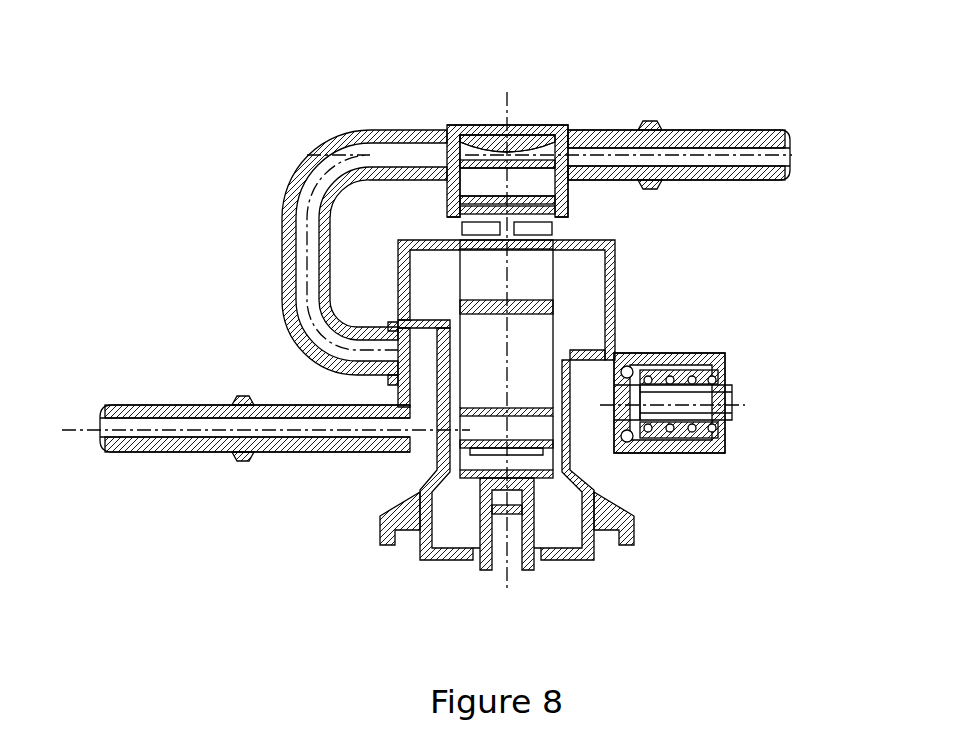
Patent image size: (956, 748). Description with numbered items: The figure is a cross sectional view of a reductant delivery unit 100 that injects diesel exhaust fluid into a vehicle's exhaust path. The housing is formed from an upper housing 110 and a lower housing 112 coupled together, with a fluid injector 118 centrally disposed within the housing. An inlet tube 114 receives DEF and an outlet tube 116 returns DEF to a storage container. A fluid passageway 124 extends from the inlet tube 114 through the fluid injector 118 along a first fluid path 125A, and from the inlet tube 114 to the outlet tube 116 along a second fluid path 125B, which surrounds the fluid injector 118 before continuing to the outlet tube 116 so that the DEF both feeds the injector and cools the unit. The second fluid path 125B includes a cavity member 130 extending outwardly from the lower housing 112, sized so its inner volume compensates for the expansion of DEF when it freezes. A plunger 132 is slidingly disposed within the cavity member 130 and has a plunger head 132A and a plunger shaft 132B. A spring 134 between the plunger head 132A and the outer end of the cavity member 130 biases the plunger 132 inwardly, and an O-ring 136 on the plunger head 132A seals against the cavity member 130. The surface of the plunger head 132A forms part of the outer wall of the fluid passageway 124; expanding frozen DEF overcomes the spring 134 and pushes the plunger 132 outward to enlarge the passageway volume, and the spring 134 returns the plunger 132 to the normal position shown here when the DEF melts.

The reductant delivery unit 100 is at (203, 76).
The upper housing 110 is at (653, 254).
The lower housing 112 is at (427, 560).
The inlet tube 114 is at (622, 120).
The outlet tube 116 is at (207, 451).
The fluid injector 118 is at (456, 283).
The fluid passageway 124 is at (545, 148).
The first fluid path 125A is at (487, 182).
The second fluid path 125B is at (298, 256).
The cavity member 130 is at (683, 444).
The plunger 132 is at (660, 382).
The plunger head 132A is at (618, 409).
The plunger shaft 132B is at (733, 408).
The spring 134 is at (691, 378).
The O-ring 136 is at (630, 440).